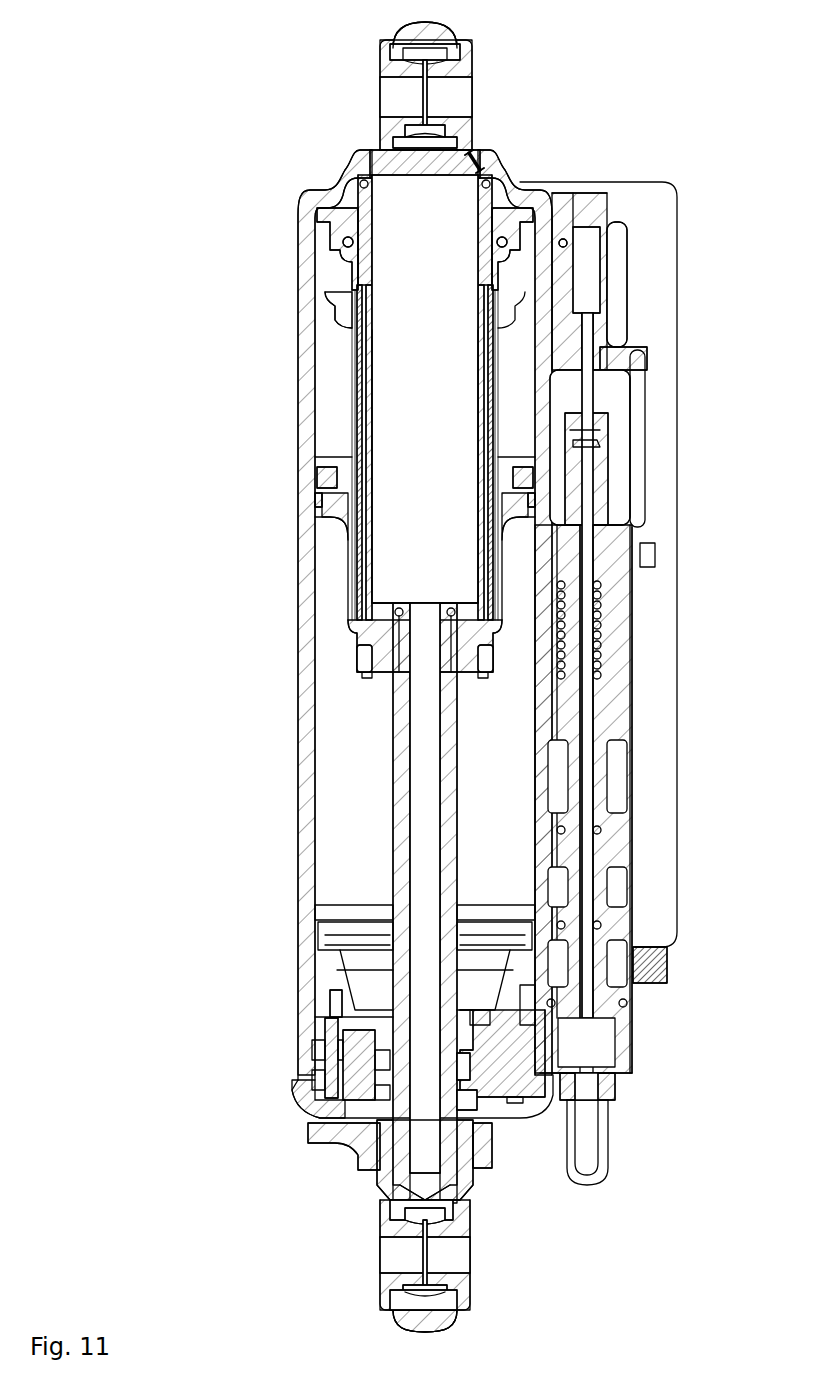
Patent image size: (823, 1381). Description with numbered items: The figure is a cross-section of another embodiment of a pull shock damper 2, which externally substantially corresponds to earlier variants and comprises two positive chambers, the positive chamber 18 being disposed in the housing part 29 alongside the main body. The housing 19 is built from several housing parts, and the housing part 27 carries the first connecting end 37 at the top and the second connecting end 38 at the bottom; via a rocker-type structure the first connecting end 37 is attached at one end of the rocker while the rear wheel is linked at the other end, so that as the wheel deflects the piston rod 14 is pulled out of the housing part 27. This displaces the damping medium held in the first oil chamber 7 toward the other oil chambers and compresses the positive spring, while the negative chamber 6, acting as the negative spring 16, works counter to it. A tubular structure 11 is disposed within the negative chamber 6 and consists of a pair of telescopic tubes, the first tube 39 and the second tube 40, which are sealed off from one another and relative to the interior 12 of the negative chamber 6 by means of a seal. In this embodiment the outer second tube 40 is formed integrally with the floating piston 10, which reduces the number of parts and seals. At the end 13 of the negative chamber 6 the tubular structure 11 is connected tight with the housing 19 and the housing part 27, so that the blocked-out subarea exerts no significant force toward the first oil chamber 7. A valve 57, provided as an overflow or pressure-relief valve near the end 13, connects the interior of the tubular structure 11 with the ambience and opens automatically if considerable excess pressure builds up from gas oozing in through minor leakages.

The pull shock damper 2 is at (238, 133).
The negative chamber 6 is at (330, 297).
The first oil chamber 7 is at (330, 610).
The floating piston 10 is at (337, 517).
The tubular structure 11 is at (348, 332).
The interior 12 is at (315, 377).
The end 13 is at (372, 152).
The piston rod 14 is at (358, 1158).
The negative spring 16 is at (330, 447).
The positive chamber 18 is at (652, 652).
The housing 19 is at (292, 423).
The housing part 27 is at (300, 725).
The housing part 29 is at (685, 381).
The first connecting end 37 is at (477, 34).
The second connecting end 38 is at (475, 1318).
The first tube 39 is at (477, 242).
The second tube 40 is at (476, 552).
The valve 57 is at (484, 150).